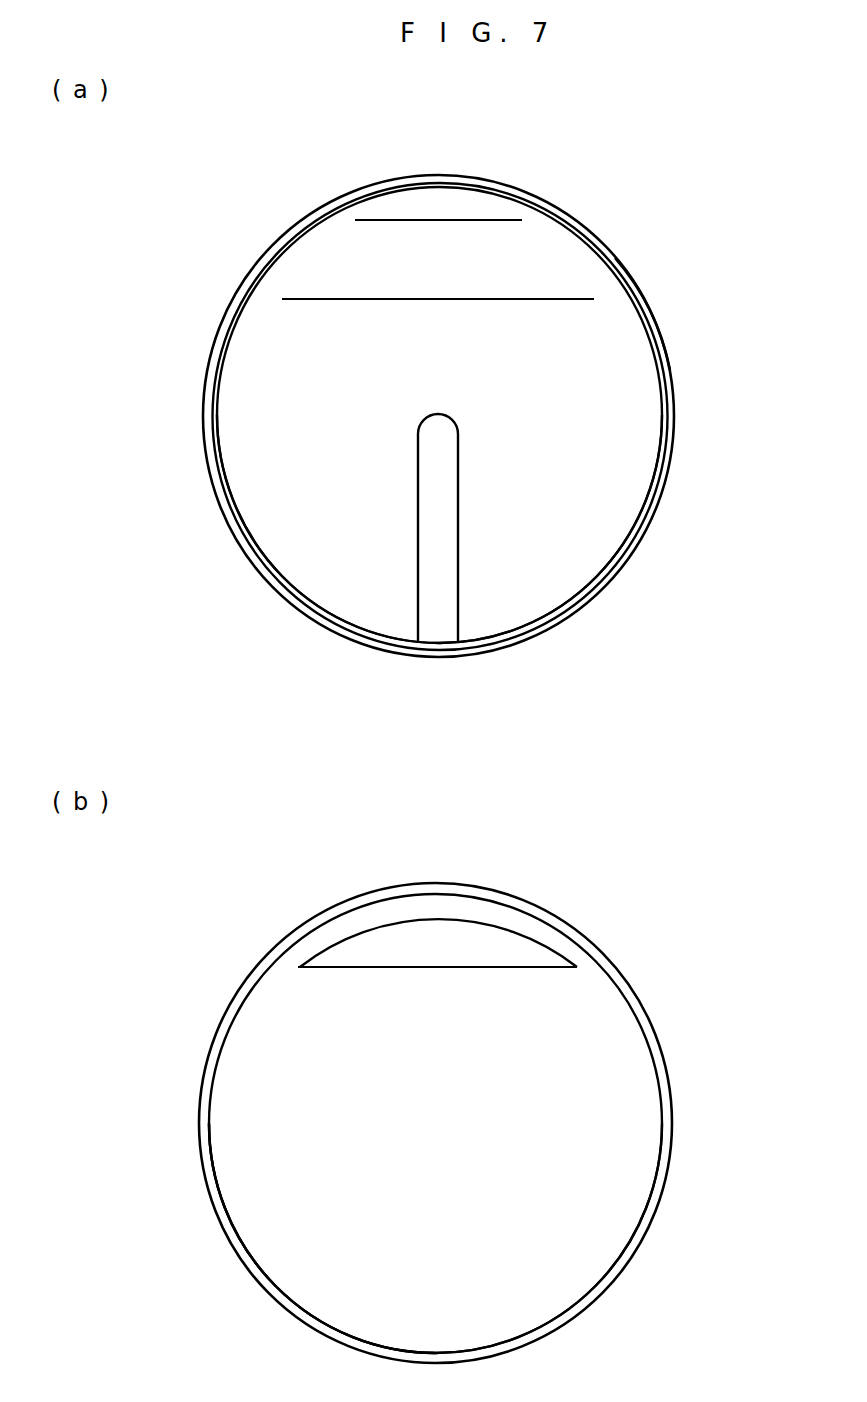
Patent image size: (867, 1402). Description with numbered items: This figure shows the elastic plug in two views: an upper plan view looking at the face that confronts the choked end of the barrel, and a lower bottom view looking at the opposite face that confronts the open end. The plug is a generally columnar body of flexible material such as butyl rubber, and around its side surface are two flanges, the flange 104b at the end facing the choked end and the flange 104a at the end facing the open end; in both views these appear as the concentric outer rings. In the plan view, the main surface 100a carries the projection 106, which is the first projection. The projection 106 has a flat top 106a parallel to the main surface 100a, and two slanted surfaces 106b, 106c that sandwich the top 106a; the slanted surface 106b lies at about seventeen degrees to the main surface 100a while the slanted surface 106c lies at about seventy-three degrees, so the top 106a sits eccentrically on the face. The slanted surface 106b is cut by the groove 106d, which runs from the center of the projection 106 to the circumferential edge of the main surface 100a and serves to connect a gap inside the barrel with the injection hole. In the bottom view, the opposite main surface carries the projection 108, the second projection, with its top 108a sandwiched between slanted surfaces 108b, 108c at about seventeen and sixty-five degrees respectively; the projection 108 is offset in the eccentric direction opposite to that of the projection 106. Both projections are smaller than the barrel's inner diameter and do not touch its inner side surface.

The main surface 100a is at (652, 333).
The flange 104b is at (615, 258).
The flange 104a is at (608, 975).
The projection 106 is at (628, 415).
The top 106a is at (380, 235).
The slanted surface 106b is at (300, 528).
The slanted surface 106c is at (445, 207).
The groove 106d is at (457, 573).
The projection 108 is at (618, 1075).
The top 108a is at (345, 967).
The slanted surface 108b is at (293, 1243).
The slanted surface 108c is at (432, 921).